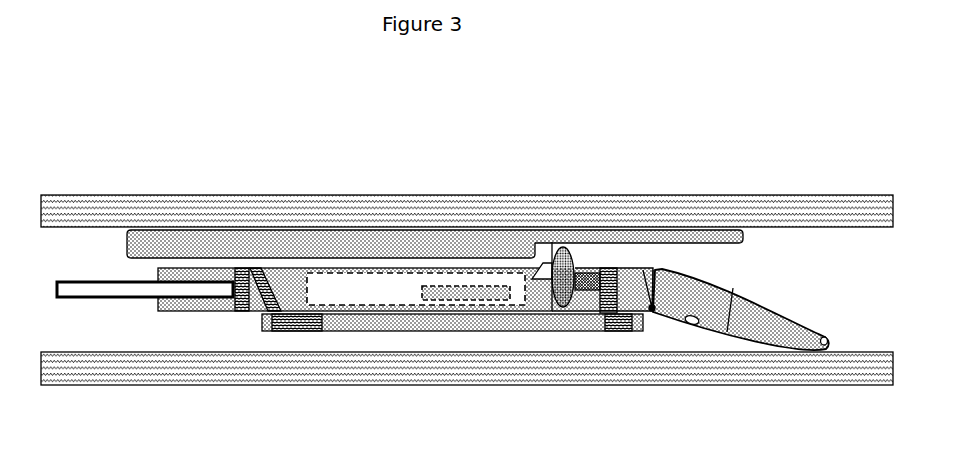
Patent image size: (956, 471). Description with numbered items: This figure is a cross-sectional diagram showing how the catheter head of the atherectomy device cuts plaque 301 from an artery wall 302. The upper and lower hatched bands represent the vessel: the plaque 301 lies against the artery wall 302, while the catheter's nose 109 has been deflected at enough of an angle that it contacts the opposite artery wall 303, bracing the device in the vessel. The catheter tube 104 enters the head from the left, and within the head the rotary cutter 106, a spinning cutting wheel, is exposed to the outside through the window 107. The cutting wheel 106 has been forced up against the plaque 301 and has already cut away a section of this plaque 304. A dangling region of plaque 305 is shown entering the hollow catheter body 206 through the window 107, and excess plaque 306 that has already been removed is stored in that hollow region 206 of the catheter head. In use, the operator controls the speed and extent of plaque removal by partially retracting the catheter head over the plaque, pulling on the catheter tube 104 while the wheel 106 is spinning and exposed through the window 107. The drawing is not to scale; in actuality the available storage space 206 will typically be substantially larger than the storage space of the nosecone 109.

The artery wall 302 is at (180, 190).
The opposite artery wall 303 is at (177, 395).
The plaque 301 is at (120, 248).
The cut-away section of plaque 304 is at (733, 248).
The window 107 is at (577, 232).
The hollow catheter body 206 is at (365, 290).
The excess plaque 306 is at (460, 293).
The catheter tube 104 is at (135, 303).
The dangling region of plaque 305 is at (547, 263).
The rotary cutter 106 is at (578, 243).
The nose 109 is at (830, 322).